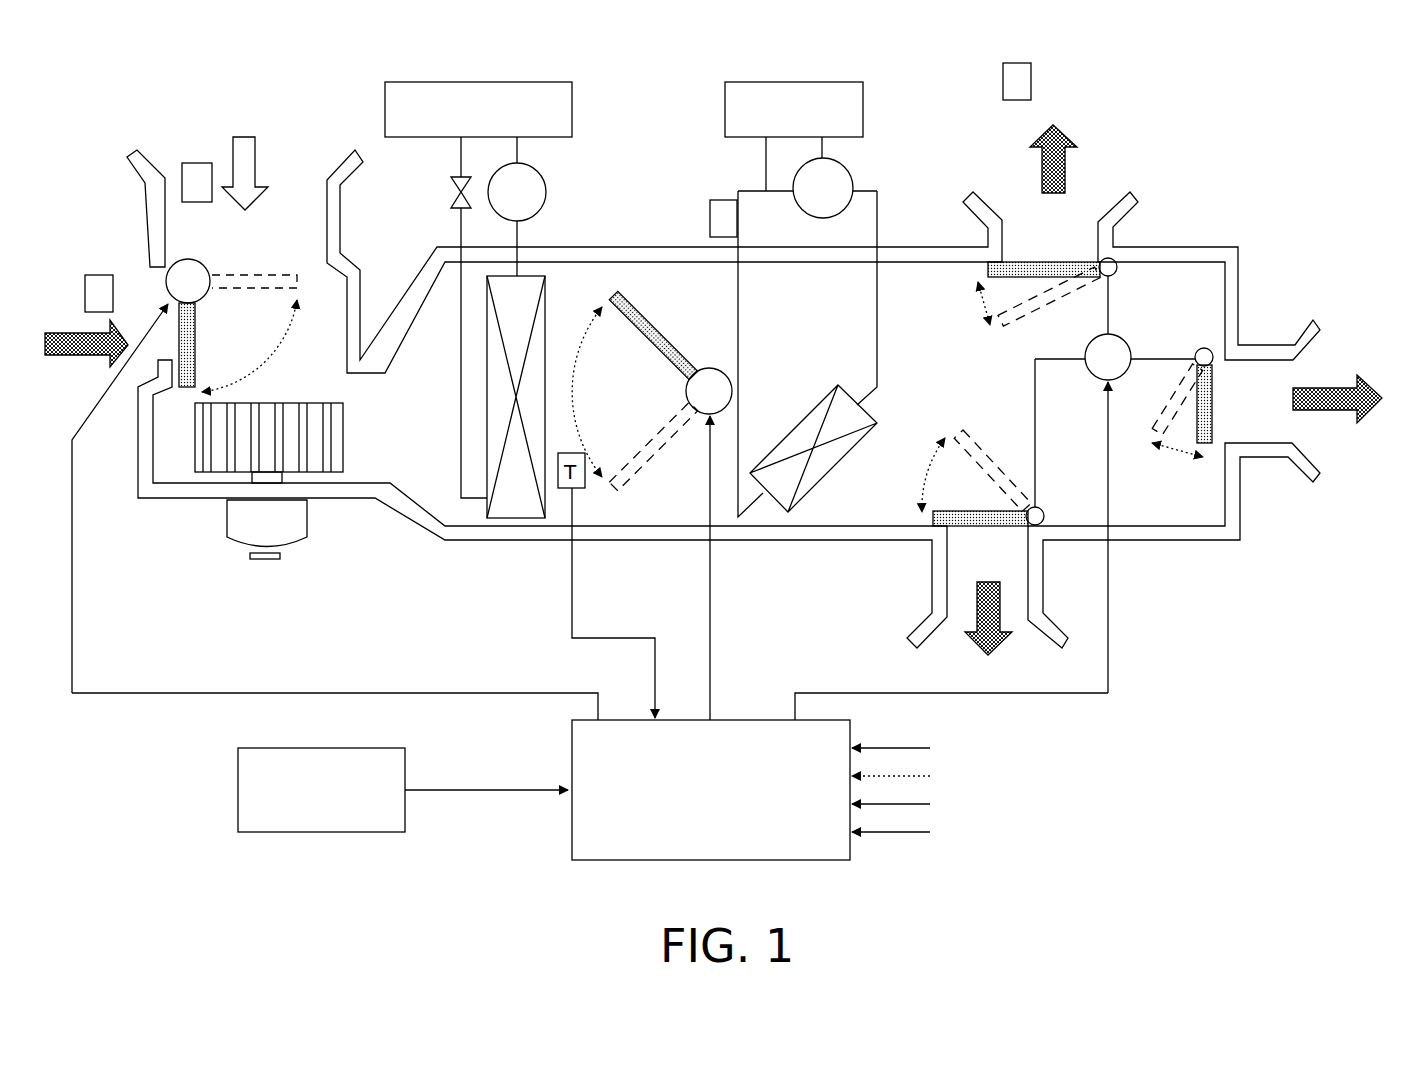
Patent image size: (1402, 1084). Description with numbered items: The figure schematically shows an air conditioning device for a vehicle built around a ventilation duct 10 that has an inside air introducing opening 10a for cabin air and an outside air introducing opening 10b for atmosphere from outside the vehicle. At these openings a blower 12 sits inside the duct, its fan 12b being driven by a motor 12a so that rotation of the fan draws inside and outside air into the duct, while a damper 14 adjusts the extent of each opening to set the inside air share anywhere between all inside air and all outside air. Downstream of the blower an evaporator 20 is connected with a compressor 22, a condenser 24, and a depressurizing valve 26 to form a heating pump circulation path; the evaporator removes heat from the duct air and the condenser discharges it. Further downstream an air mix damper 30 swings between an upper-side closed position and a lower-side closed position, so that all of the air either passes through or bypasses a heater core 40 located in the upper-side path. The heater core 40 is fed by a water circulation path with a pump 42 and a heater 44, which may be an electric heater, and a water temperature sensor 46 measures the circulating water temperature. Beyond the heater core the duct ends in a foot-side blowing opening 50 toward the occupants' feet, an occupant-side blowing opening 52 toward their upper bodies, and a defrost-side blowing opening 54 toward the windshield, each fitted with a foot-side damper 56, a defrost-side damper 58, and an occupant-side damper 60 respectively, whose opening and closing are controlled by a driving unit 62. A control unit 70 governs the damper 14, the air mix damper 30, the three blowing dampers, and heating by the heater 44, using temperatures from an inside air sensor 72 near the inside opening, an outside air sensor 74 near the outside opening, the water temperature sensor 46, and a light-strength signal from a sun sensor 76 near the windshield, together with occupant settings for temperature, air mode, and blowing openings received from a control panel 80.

The ventilation duct 10 is at (627, 247).
The inside air introducing opening 10a is at (157, 297).
The outside air introducing opening 10b is at (292, 203).
The blower 12 is at (246, 504).
The motor 12a is at (300, 543).
The fan 12b is at (193, 443).
The damper 14 is at (228, 326).
The evaporator 20 is at (487, 364).
The compressor 22 is at (541, 168).
The condenser 24 is at (572, 95).
The depressurizing valve 26 is at (452, 190).
The air mix damper 30 is at (666, 306).
The heater core 40 is at (802, 410).
The pump 42 is at (853, 175).
The heater 44 is at (863, 108).
The water temperature sensor 46 is at (717, 200).
The foot-side blowing opening 50 is at (960, 553).
The occupant-side blowing opening 52 is at (1250, 387).
The defrost-side blowing opening 54 is at (1073, 237).
The foot-side damper 56 is at (993, 530).
The defrost-side damper 58 is at (1045, 322).
The occupant-side damper 60 is at (1222, 420).
The driving unit 62 is at (1100, 383).
The control unit 70 is at (747, 720).
The inside air sensor 72 is at (85, 292).
The outside air sensor 74 is at (197, 163).
The sun sensor 76 is at (1031, 78).
The control panel 80 is at (238, 777).